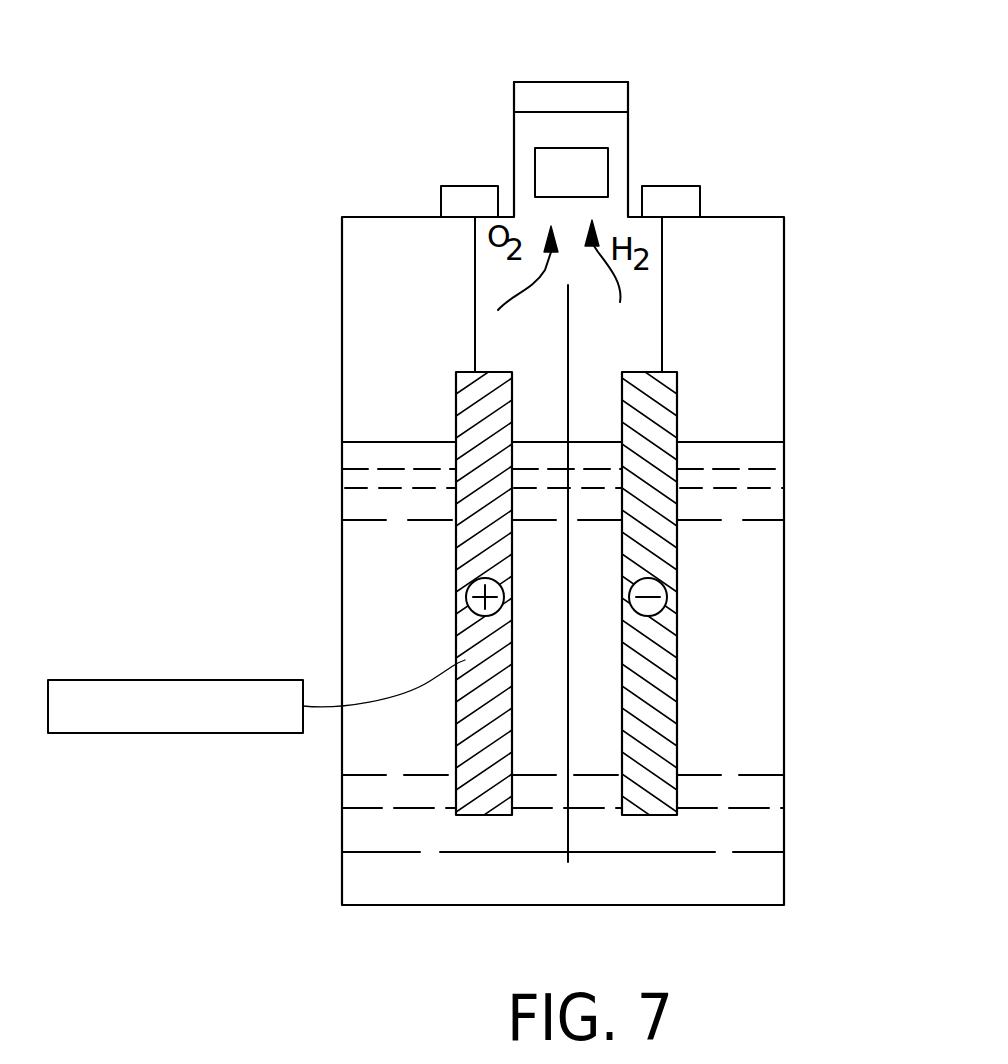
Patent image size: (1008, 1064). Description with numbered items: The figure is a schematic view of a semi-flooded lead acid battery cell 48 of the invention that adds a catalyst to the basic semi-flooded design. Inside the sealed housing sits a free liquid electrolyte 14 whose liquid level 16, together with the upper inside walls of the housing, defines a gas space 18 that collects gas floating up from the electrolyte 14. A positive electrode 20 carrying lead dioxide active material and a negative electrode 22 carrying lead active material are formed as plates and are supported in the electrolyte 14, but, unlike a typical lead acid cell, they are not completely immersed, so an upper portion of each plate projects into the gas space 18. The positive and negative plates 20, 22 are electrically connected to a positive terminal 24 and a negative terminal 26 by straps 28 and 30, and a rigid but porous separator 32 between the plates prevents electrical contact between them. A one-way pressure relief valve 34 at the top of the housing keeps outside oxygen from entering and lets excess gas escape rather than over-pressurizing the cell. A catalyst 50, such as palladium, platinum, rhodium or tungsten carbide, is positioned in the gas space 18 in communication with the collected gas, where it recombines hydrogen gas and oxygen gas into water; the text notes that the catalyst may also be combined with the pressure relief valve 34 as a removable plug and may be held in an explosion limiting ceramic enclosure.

The liquid electrolyte 14 is at (770, 620).
The liquid level 16 is at (728, 442).
The gas space 18 is at (758, 331).
The positive electrode 20 is at (455, 577).
The negative electrode 22 is at (677, 562).
The positive terminal 24 is at (455, 186).
The negative terminal 26 is at (701, 213).
The strap 28 is at (473, 248).
The strap 30 is at (663, 281).
The separator 32 is at (568, 862).
The one-way pressure relief valve 34 is at (601, 82).
The battery cell 48 is at (804, 870).
The catalyst 50 is at (593, 162).